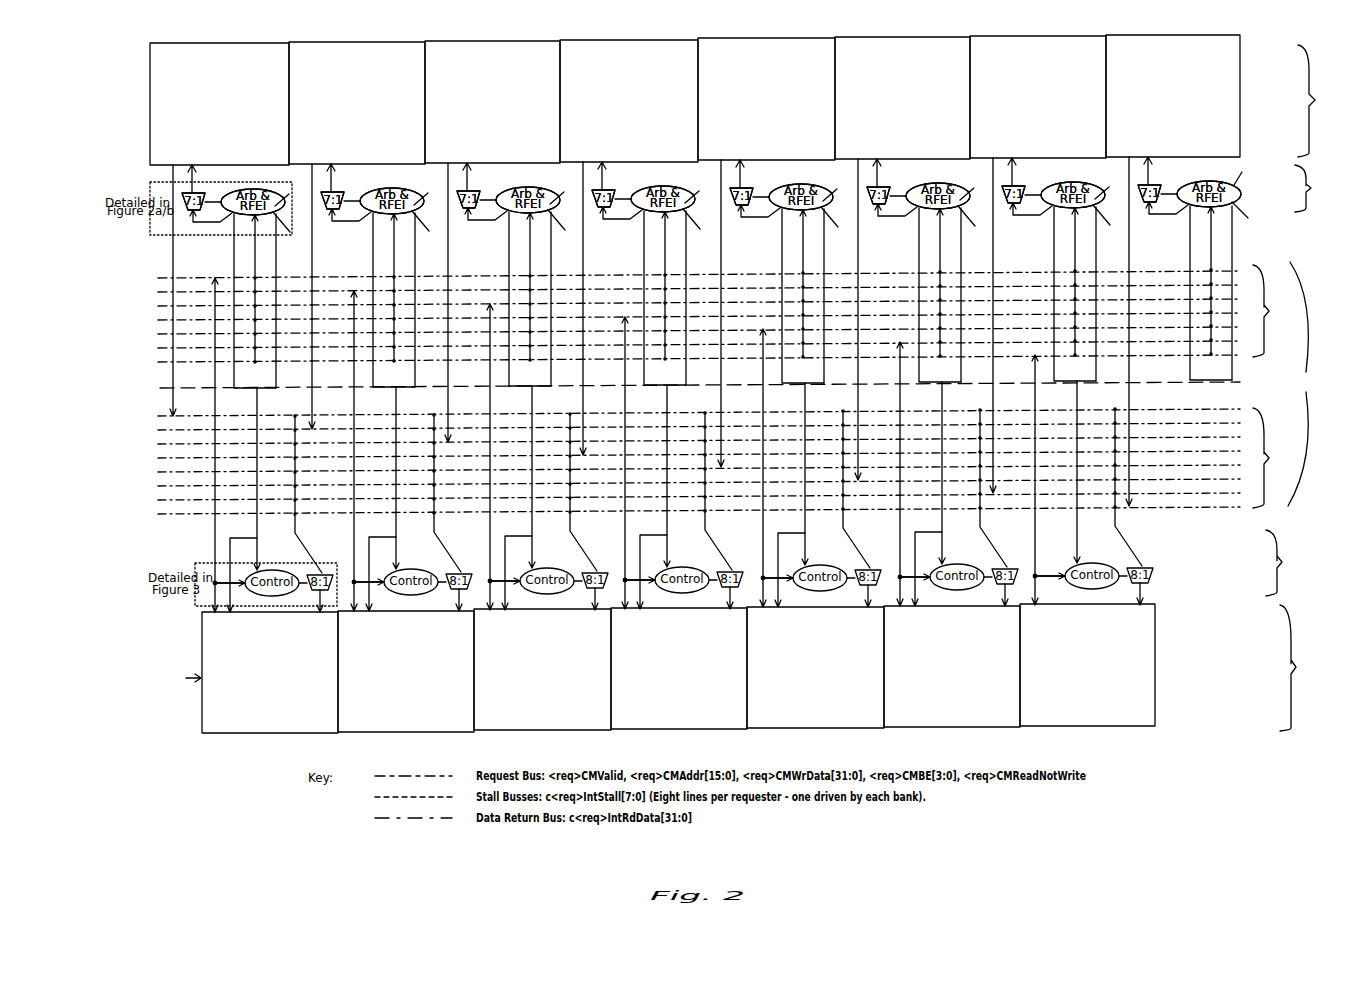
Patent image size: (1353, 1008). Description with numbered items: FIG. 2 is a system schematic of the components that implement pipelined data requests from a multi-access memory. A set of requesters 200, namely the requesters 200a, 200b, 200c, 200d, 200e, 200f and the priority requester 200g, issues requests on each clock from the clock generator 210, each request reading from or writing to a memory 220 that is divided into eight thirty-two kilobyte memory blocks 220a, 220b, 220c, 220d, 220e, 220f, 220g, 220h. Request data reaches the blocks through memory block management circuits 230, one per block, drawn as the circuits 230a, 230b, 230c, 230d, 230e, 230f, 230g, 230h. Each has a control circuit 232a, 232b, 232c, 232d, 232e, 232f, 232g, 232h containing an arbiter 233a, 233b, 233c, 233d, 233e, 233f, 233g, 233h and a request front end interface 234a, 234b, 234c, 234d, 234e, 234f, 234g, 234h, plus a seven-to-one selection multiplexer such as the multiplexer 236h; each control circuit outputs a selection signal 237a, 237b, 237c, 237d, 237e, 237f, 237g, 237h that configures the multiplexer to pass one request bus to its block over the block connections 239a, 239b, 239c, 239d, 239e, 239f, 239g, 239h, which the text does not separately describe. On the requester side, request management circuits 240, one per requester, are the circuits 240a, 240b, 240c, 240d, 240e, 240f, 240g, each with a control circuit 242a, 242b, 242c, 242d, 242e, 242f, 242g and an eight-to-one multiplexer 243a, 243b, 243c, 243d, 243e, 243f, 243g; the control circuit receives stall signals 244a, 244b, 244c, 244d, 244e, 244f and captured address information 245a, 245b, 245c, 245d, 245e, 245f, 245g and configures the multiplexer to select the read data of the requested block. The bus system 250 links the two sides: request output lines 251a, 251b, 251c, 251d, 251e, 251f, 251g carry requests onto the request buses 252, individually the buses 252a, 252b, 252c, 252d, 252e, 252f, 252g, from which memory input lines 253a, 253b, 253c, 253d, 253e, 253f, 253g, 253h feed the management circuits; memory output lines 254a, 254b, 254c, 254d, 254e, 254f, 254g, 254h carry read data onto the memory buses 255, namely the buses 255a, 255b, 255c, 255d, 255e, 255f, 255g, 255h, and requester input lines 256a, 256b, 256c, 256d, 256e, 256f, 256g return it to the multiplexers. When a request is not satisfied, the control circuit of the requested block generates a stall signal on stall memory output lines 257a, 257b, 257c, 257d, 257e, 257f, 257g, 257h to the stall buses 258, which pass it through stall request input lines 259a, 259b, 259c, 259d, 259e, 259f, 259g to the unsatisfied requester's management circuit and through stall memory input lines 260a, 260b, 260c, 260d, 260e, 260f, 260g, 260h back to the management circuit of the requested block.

The requesters 200 is at (1309, 668).
The requester 200a is at (270, 672).
The requester 200b is at (406, 671).
The requester 200c is at (542, 669).
The requester 200d is at (679, 668).
The requester 200e is at (815, 667).
The requester 200f is at (952, 666).
The requester 200g is at (1087, 665).
The clock generator 210 is at (156, 691).
The memory 220 is at (1319, 101).
The memory block 220a is at (219, 104).
The memory block 220b is at (357, 103).
The memory block 220c is at (492, 102).
The memory block 220d is at (629, 101).
The memory block 220e is at (766, 99).
The memory block 220f is at (902, 98).
The memory block 220g is at (1038, 97).
The memory block 220h is at (1173, 96).
The memory block management circuit 230 is at (1318, 188).
The memory block management circuit 230a is at (233, 220).
The memory block management circuit 230b is at (372, 219).
The memory block management circuit 230c is at (508, 218).
The memory block management circuit 230d is at (643, 217).
The memory block management circuit 230e is at (781, 215).
The memory block management circuit 230f is at (918, 214).
The memory block management circuit 230g is at (1053, 213).
The memory block management circuit 230h is at (1189, 212).
The control circuit 232a is at (292, 235).
The control circuit 232b is at (432, 234).
The control circuit 232c is at (567, 233).
The control circuit 232d is at (703, 232).
The control circuit 232e is at (840, 230).
The control circuit 232f is at (976, 229).
The control circuit 232g is at (1113, 228).
The control circuit 232h is at (1252, 171).
The arbiter 233a is at (252, 191).
The arbiter 233b is at (392, 189).
The arbiter 233c is at (528, 188).
The arbiter 233d is at (663, 187).
The arbiter 233e is at (801, 185).
The arbiter 233f is at (938, 184).
The arbiter 233g is at (1073, 183).
The arbiter 233h is at (1209, 183).
The request front end interface 234a is at (293, 194).
The request front end interface 234b is at (432, 193).
The request front end interface 234c is at (568, 192).
The request front end interface 234d is at (703, 191).
The request front end interface 234e is at (841, 189).
The request front end interface 234f is at (977, 188).
The request front end interface 234g is at (1113, 187).
The request front end interface 234h is at (1254, 217).
The selection circuit 236h is at (1173, 173).
The selection signal 237a is at (209, 196).
The selection signal 237b is at (353, 189).
The selection signal 237c is at (488, 188).
The selection signal 237d is at (624, 187).
The selection signal 237e is at (761, 185).
The selection signal 237f is at (897, 184).
The selection signal 237g is at (1034, 183).
The selection signal 237h is at (1157, 204).
The bank access line a 239a is at (191, 168).
The bank access line b 239b is at (329, 168).
The bank access line c 239c is at (465, 167).
The bank access line d 239d is at (600, 166).
The bank access line e 239e is at (738, 164).
The bank access line f 239f is at (874, 163).
The bank access line g 239g is at (1010, 162).
The bank access line h 239h is at (1146, 161).
The request management circuit 240 is at (1296, 563).
The request management circuit 240a is at (313, 573).
The request management circuit 240b is at (467, 565).
The request management circuit 240c is at (602, 564).
The request management circuit 240d is at (738, 563).
The request management circuit 240e is at (875, 561).
The request management circuit 240f is at (1011, 560).
The request management circuit 240g is at (1155, 559).
The control circuit 242a is at (273, 569).
The control circuit 242b is at (410, 585).
The control circuit 242c is at (546, 584).
The control circuit 242d is at (681, 583).
The control circuit 242e is at (819, 581).
The control circuit 242f is at (956, 580).
The control circuit 242g is at (1096, 558).
The selection circuit 243a is at (316, 593).
The selection circuit 243b is at (453, 595).
The selection circuit 243c is at (589, 594).
The selection circuit 243d is at (724, 593).
The selection circuit 243e is at (862, 591).
The selection circuit 243f is at (998, 590).
The selection circuit 243g is at (1175, 591).
The stall signals 244a is at (236, 567).
The stall signals 244b is at (375, 566).
The stall signals 244c is at (511, 565).
The stall signals 244d is at (646, 564).
The stall signals 244e is at (784, 562).
The stall signals 244f is at (921, 561).
The address information 245a is at (227, 586).
The address information 245b is at (361, 608).
The address information 245c is at (497, 607).
The address information 245d is at (632, 606).
The address information 245e is at (770, 604).
The address information 245f is at (907, 603).
The address information 245g is at (1053, 584).
The bus system 250 is at (1304, 375).
The request output line 251a is at (216, 445).
The request output line 251b is at (355, 451).
The request output line 251c is at (491, 457).
The request output line 251d is at (626, 463).
The request output line 251e is at (764, 468).
The request output line 251f is at (901, 474).
The request output line 251g is at (1036, 480).
The request buses 252 is at (734, 313).
The request bus 252a is at (1151, 271).
The request bus 252b is at (1151, 285).
The request bus 252c is at (1151, 299).
The request bus 252d is at (1151, 313).
The request bus 252e is at (1151, 327).
The request bus 252f is at (1150, 341).
The request bus 252g is at (1151, 355).
The memory input line 253a is at (248, 289).
The memory input line 253b is at (387, 288).
The memory input line 253c is at (523, 287).
The memory input line 253d is at (658, 286).
The memory input line 253e is at (796, 284).
The memory input line 253f is at (933, 283).
The memory input line 253g is at (1068, 282).
The memory input line 253h is at (1204, 281).
The memory output line 254a is at (173, 266).
The memory output line 254b is at (300, 296).
The memory output line 254c is at (436, 302).
The memory output line 254d is at (571, 308).
The memory output line 254e is at (709, 313).
The memory output line 254f is at (846, 319).
The memory output line 254g is at (981, 325).
The memory output line 254h is at (1144, 331).
The memory buses 255 is at (734, 461).
The memory bus 255a is at (1151, 409).
The memory bus 255b is at (1151, 423).
The memory bus 255c is at (1151, 437).
The memory bus 255d is at (1151, 451).
The memory bus 255e is at (1151, 465).
The memory bus 255f is at (1150, 479).
The memory bus 255g is at (1151, 493).
The memory bus 255h is at (1151, 507).
The requester input line 256a is at (310, 493).
The requester input line 256b is at (449, 492).
The requester input line 256c is at (585, 491).
The requester input line 256d is at (720, 490).
The requester input line 256e is at (858, 488).
The requester input line 256f is at (994, 487).
The requester input line 256g is at (1130, 486).
The stall memory output line 257a is at (247, 301).
The stall memory output line 257b is at (386, 300).
The stall memory output line 257c is at (522, 299).
The stall memory output line 257d is at (657, 298).
The stall memory output line 257e is at (795, 296).
The stall memory output line 257f is at (932, 295).
The stall memory output line 257g is at (1067, 294).
The stall memory output line 257h is at (1203, 293).
The stall buses 258 is at (1225, 385).
The stall request input line 259a is at (273, 479).
The stall request input line 259b is at (412, 478).
The stall request input line 259c is at (548, 477).
The stall request input line 259d is at (683, 476).
The stall request input line 259e is at (821, 474).
The stall request input line 259f is at (957, 473).
The stall request input line 259g is at (1093, 472).
The stall memory input line 260a is at (284, 301).
The stall memory input line 260b is at (423, 300).
The stall memory input line 260c is at (559, 299).
The stall memory input line 260d is at (694, 298).
The stall memory input line 260e is at (832, 296).
The stall memory input line 260f is at (968, 295).
The stall memory input line 260g is at (1104, 294).
The stall memory input line 260h is at (1223, 293).